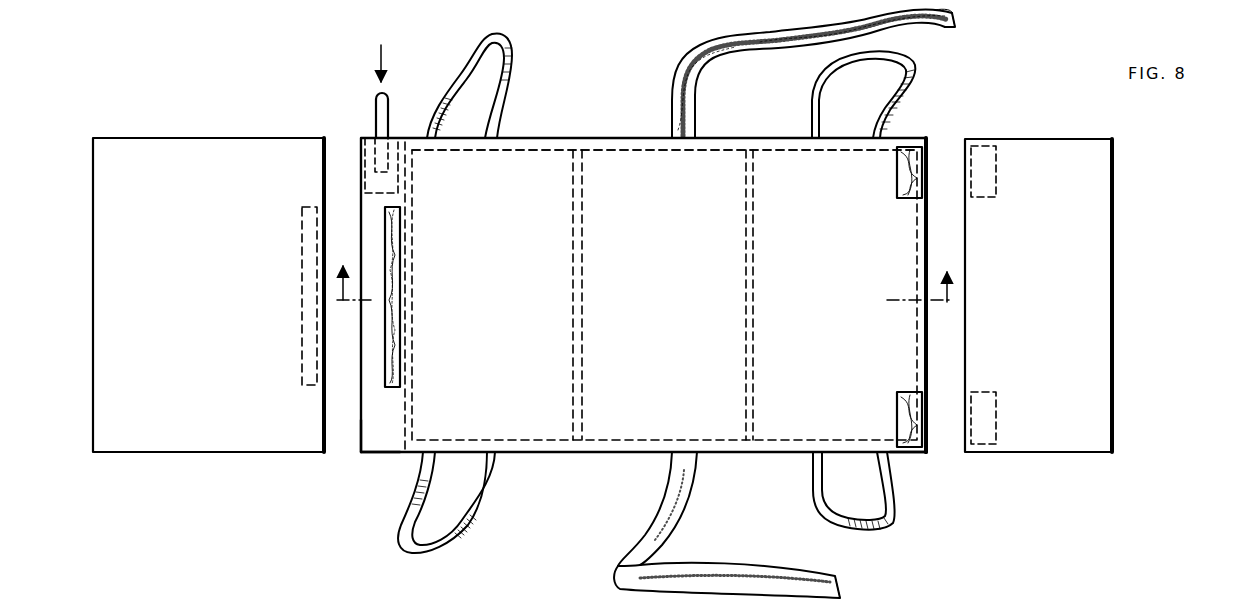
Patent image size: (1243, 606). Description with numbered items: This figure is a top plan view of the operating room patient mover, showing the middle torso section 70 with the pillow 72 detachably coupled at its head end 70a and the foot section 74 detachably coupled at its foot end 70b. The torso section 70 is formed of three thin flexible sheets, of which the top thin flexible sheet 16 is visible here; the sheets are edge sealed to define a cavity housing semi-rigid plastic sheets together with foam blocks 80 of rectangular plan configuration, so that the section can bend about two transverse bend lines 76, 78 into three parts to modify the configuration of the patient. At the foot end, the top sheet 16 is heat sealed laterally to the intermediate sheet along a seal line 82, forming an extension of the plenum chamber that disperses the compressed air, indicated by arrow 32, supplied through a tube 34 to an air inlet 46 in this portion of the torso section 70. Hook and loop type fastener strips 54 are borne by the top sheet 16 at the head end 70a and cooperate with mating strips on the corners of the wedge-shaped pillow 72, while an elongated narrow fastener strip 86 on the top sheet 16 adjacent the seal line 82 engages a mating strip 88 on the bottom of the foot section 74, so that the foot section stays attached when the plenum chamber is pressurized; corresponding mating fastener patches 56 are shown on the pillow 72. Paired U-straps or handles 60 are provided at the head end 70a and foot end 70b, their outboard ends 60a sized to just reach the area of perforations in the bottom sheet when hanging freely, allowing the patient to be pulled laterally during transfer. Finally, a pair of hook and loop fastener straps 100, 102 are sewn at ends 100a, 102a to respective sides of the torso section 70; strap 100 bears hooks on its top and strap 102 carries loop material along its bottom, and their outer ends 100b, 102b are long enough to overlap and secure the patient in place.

The top thin flexible sheet 16 is at (674, 331).
The arrow indicating compressed air 32 is at (386, 66).
The tube 34 is at (389, 115).
The air inlet 46 is at (365, 162).
The hook and loop type fastener strips 54 is at (897, 176).
The mating fastener patches 56 is at (998, 197).
The U-straps, loops or handles 60 is at (512, 69).
The outboard ends of the straps 60a is at (895, 528).
The middle torso section 70 is at (672, 303).
The head end 70a is at (932, 459).
The foot end 70b is at (370, 456).
The pillow 72 is at (1072, 295).
The foot section 74 is at (185, 295).
The transverse bend line 76 is at (577, 291).
The transverse bend line 78 is at (754, 293).
The foam blocks 80 is at (526, 178).
The seal line 82 is at (406, 418).
The hook and loop type fastener strip 86 is at (398, 357).
The mating VELCRO strip 88 is at (302, 341).
The hook and loop type fastener strap 100 is at (830, 102).
The sewn end of strap 100a is at (687, 135).
The outer end of strap 100b is at (945, 27).
The hook and loop type fastener strap 102 is at (774, 501).
The sewn end of strap 102a is at (688, 456).
The outer end of strap 102b is at (843, 586).